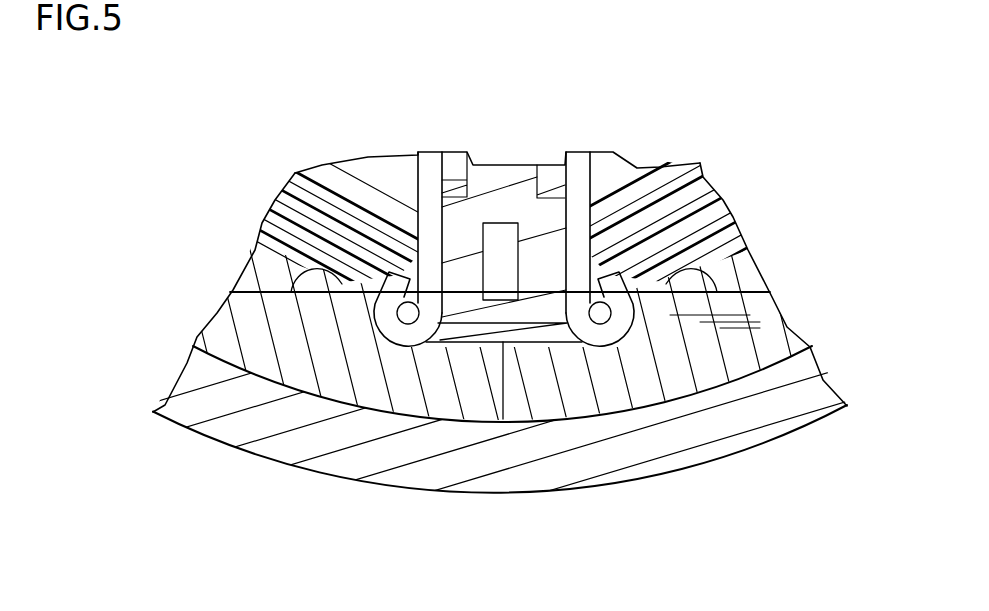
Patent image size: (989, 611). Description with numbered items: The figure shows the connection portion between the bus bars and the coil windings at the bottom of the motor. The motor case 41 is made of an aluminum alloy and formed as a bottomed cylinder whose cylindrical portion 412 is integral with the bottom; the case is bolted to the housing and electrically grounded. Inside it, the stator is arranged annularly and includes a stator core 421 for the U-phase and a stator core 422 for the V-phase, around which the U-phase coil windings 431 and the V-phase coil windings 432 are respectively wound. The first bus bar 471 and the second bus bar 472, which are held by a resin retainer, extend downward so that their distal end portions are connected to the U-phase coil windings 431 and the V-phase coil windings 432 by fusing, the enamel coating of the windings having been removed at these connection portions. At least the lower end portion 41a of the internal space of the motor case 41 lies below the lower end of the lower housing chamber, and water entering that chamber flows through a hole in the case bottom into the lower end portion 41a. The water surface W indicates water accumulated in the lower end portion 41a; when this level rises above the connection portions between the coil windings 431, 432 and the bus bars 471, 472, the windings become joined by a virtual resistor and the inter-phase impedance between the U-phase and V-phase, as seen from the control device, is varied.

The motor case 41 is at (205, 435).
The lower end portion 41a is at (548, 410).
The cylindrical portion 412 is at (493, 483).
The stator core for U-phase 421 is at (338, 377).
The stator core for V-phase 422 is at (703, 360).
The U-phase coil windings 431 is at (403, 325).
The V-phase coil windings 432 is at (606, 325).
The first bus bar 471 is at (428, 160).
The second bus bar 472 is at (575, 168).
The water surface W is at (747, 291).